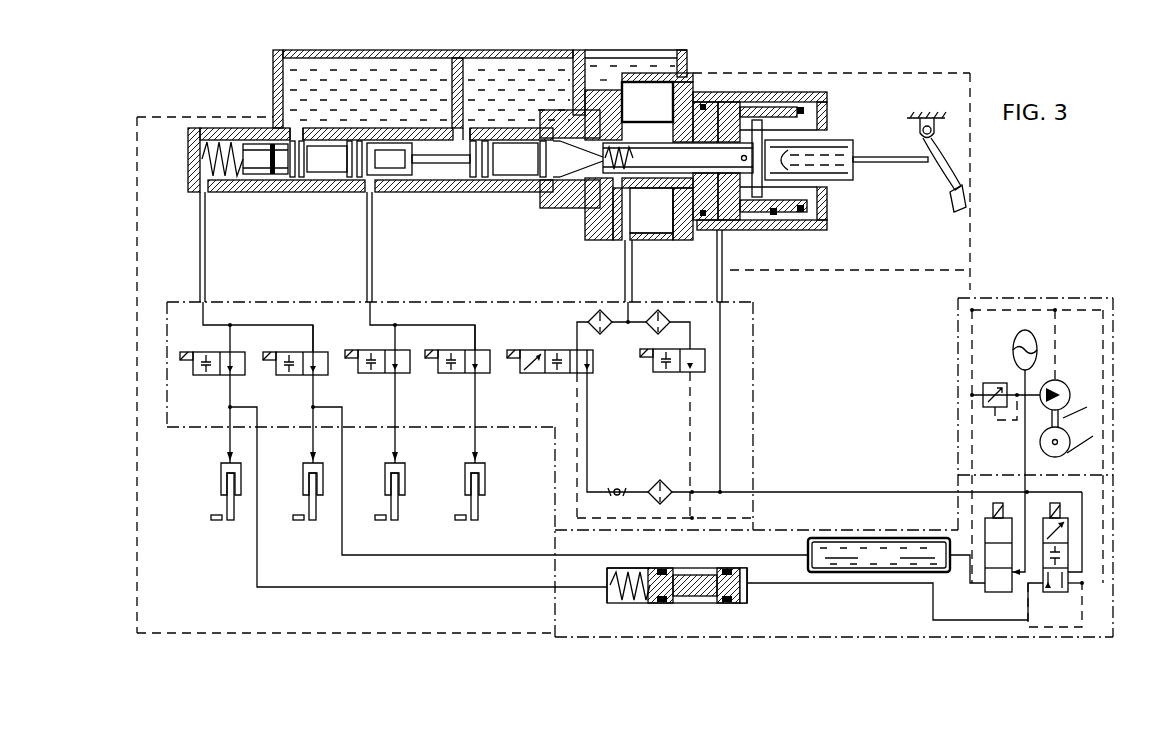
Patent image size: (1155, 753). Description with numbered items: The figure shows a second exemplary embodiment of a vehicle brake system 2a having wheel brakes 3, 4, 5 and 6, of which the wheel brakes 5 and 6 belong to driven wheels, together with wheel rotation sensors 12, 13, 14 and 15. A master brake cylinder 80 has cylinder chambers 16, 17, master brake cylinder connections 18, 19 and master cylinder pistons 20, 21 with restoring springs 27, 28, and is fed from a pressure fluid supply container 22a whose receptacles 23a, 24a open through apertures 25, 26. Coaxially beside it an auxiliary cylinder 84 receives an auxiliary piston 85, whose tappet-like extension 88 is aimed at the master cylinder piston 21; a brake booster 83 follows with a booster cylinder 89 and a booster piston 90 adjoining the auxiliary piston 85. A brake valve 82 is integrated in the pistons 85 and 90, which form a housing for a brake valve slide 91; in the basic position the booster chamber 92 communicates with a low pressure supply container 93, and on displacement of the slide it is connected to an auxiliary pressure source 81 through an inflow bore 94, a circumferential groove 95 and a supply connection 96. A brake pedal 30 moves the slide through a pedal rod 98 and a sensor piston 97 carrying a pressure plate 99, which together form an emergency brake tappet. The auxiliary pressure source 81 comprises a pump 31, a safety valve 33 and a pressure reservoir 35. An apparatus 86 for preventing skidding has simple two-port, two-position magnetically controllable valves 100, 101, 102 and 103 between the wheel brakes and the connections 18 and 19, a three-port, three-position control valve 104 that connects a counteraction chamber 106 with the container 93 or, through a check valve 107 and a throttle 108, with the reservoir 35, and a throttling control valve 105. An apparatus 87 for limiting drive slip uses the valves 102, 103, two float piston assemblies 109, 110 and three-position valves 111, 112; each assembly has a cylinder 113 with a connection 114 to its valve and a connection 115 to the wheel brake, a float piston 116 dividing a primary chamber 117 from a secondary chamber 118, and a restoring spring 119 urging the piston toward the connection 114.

The vehicle brake system 2a is at (1015, 235).
The wheel brake 3 is at (384, 480).
The wheel brake 4 is at (464, 480).
The wheel brake 5 is at (220, 480).
The wheel brake 6 is at (302, 480).
The wheel rotation sensor 12 is at (374, 520).
The wheel rotation sensor 13 is at (456, 520).
The wheel rotation sensor 14 is at (208, 520).
The wheel rotation sensor 15 is at (292, 520).
The cylinder chamber 16 is at (270, 176).
The cylinder chamber 17 is at (432, 165).
The master brake cylinder connection 18 is at (202, 194).
The master brake cylinder connection 19 is at (368, 192).
The master cylinder piston 20 is at (301, 178).
The master cylinder piston 21 is at (479, 178).
The pressure fluid supply container 22a is at (273, 84).
The receptacle 23a is at (388, 102).
The receptacle 24a is at (526, 97).
The aperture 25 is at (296, 128).
The aperture 26 is at (466, 128).
The restoring spring 27 is at (203, 151).
The restoring spring 28 is at (396, 176).
The brake pedal 30 is at (946, 203).
The pump 31 is at (1063, 384).
The safety valve 33 is at (990, 383).
The pressure reservoir 35 is at (1014, 342).
The master brake cylinder 80 is at (262, 176).
The auxiliary pressure source 81 is at (1044, 298).
The brake valve 82 is at (731, 130).
The brake booster 83 is at (778, 92).
The auxiliary cylinder 84 is at (644, 235).
The auxiliary piston 85 is at (676, 235).
The apparatus for preventing the danger of skidding 86 is at (441, 302).
The apparatus for limiting drive slip 87 is at (829, 530).
The tappet-like extension 88 is at (583, 168).
The booster cylinder 89 is at (796, 102).
The booster piston 90 is at (803, 213).
The brake valve slide 91 is at (671, 143).
The booster chamber 92 is at (808, 206).
The low pressure supply container 93 is at (597, 78).
The inflow bore 94 is at (706, 120).
The circumferential groove 95 is at (758, 200).
The supply connection 96 is at (722, 222).
The sensor piston 97 is at (841, 142).
The pedal rod 98 is at (873, 158).
The pressure plate 99 is at (778, 216).
The magnetically controllable valve 100 is at (378, 373).
The magnetically controllable valve 101 is at (458, 373).
The magnetically controllable valve 102 is at (212, 375).
The magnetically controllable valve 103 is at (295, 375).
The control valve 104 is at (545, 373).
The control valve 105 is at (668, 372).
The counteraction chamber 106 is at (616, 228).
The check valve 107 is at (620, 490).
The throttle 108 is at (533, 352).
The float piston assembly 109 is at (738, 604).
The float piston assembly 110 is at (879, 555).
The electromagnetically controllable valve 111 is at (1050, 592).
The electromagnetically controllable valve 112 is at (982, 588).
The cylinder 113 is at (668, 603).
The connection 114 is at (747, 578).
The connection 115 is at (608, 585).
The float piston 116 is at (694, 596).
The primary chamber 117 is at (747, 594).
The secondary chamber 118 is at (630, 598).
The restoring spring 119 is at (607, 592).